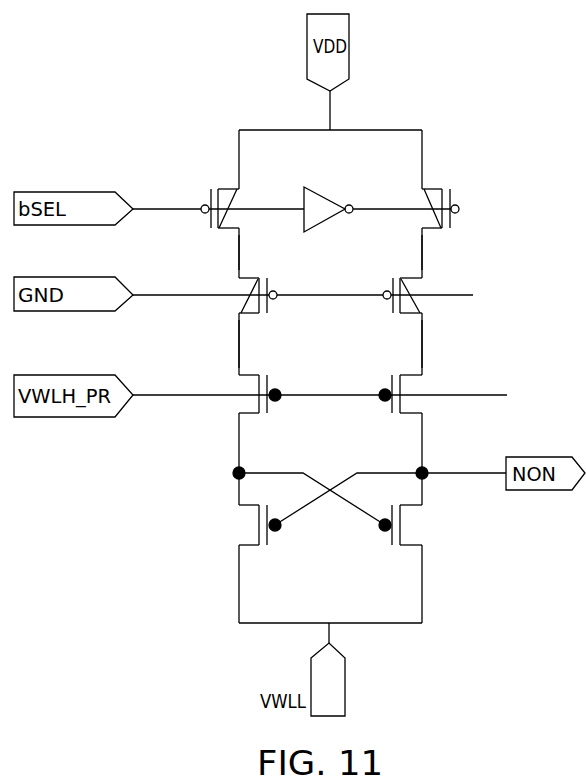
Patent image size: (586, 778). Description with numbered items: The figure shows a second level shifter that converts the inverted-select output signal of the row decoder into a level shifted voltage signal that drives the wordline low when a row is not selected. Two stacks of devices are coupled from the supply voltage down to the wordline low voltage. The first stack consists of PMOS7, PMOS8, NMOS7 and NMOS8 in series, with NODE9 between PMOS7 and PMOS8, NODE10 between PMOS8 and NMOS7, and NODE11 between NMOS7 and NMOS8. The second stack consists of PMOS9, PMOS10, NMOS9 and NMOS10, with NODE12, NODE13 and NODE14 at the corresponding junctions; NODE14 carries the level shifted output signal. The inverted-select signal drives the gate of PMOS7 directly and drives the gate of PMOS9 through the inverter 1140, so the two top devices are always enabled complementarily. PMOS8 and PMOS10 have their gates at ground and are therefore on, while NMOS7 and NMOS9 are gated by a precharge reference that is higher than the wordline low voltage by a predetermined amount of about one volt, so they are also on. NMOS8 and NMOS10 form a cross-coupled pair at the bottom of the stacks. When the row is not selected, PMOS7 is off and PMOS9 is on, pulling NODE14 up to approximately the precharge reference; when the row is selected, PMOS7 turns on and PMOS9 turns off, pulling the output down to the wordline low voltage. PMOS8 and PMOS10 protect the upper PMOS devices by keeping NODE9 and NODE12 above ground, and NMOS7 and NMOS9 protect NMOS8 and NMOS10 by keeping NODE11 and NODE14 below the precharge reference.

The PMOS transistor PMOS7 is at (230, 186).
The PMOS transistor PMOS9 is at (432, 186).
The inverter 1140 is at (325, 196).
The node NODE9 is at (239, 251).
The node NODE12 is at (422, 256).
The PMOS transistor PMOS8 is at (250, 284).
The PMOS transistor PMOS10 is at (410, 284).
The node NODE10 is at (239, 348).
The node NODE13 is at (422, 342).
The NMOS transistor NMOS7 is at (250, 383).
The NMOS transistor NMOS9 is at (410, 383).
The node NODE11 is at (272, 460).
The node NODE14 is at (428, 471).
The NMOS transistor NMOS8 is at (250, 516).
The NMOS transistor NMOS10 is at (412, 516).